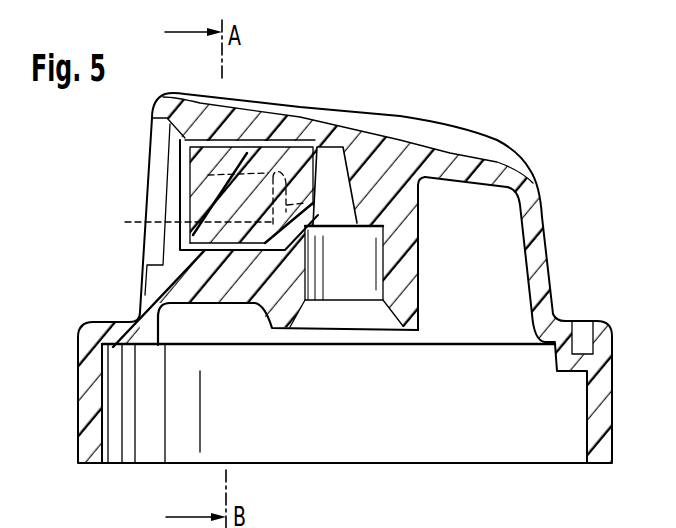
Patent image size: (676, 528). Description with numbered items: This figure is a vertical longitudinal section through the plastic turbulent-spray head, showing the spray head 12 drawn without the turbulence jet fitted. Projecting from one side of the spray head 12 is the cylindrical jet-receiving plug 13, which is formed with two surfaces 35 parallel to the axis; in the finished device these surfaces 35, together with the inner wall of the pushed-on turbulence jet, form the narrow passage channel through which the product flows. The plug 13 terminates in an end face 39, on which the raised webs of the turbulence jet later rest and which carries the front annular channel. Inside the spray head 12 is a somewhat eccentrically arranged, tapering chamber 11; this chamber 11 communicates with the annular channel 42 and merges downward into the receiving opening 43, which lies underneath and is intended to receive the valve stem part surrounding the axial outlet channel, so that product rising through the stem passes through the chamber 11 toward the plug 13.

The tapering chamber 11 is at (327, 157).
The spray head 12 is at (528, 188).
The jet-receiving plug 13 is at (200, 197).
The surfaces 35 is at (219, 176).
The end face 39 is at (203, 172).
The annular channel 42 is at (266, 300).
The receiving opening 43 is at (357, 292).